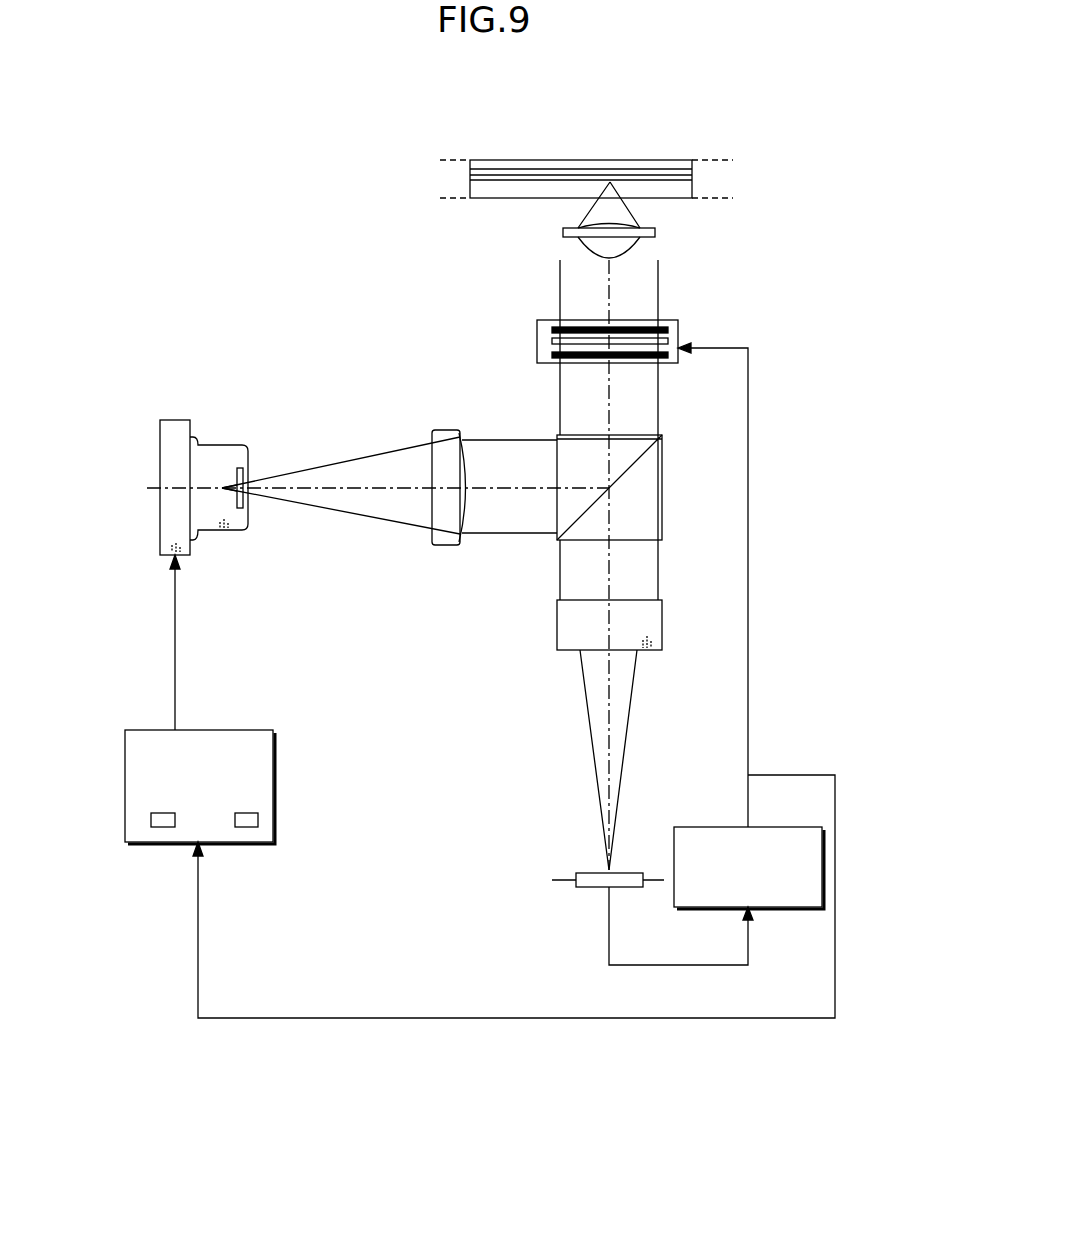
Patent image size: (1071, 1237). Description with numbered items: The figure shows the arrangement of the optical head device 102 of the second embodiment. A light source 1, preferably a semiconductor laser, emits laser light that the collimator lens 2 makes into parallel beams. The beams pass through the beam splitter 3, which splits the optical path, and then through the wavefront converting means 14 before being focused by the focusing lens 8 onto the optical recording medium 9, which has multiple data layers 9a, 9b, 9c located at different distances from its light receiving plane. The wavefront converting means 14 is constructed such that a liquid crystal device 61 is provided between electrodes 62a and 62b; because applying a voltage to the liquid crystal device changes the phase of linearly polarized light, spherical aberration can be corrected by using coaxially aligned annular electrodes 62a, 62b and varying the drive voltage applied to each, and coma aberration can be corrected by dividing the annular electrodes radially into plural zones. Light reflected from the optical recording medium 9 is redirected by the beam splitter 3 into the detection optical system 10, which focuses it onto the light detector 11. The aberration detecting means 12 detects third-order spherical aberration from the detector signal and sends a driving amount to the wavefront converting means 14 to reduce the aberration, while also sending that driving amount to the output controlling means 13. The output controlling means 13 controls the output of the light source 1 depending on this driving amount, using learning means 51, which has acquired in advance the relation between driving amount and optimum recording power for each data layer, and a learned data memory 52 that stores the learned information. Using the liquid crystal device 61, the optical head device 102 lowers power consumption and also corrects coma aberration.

The light source 1 is at (212, 455).
The collimator lens 2 is at (445, 430).
The beam splitter 3 is at (592, 527).
The focusing lens 8 is at (590, 238).
The optical recording medium 9 is at (480, 190).
The data layer 9a is at (692, 181).
The data layer 9b is at (692, 176).
The data layer 9c is at (692, 165).
The detection optical system 10 is at (568, 633).
The light detector 11 is at (585, 875).
The aberration detecting means 12 is at (699, 897).
The output controlling means 13 is at (245, 730).
The wavefront converting means 14 is at (537, 345).
The liquid crystal device 61 is at (660, 340).
The electrode 62a is at (655, 330).
The electrode 62b is at (655, 357).
The learning means 51 is at (248, 827).
The learned data memory 52 is at (163, 827).
The optical head device 102 is at (648, 1076).